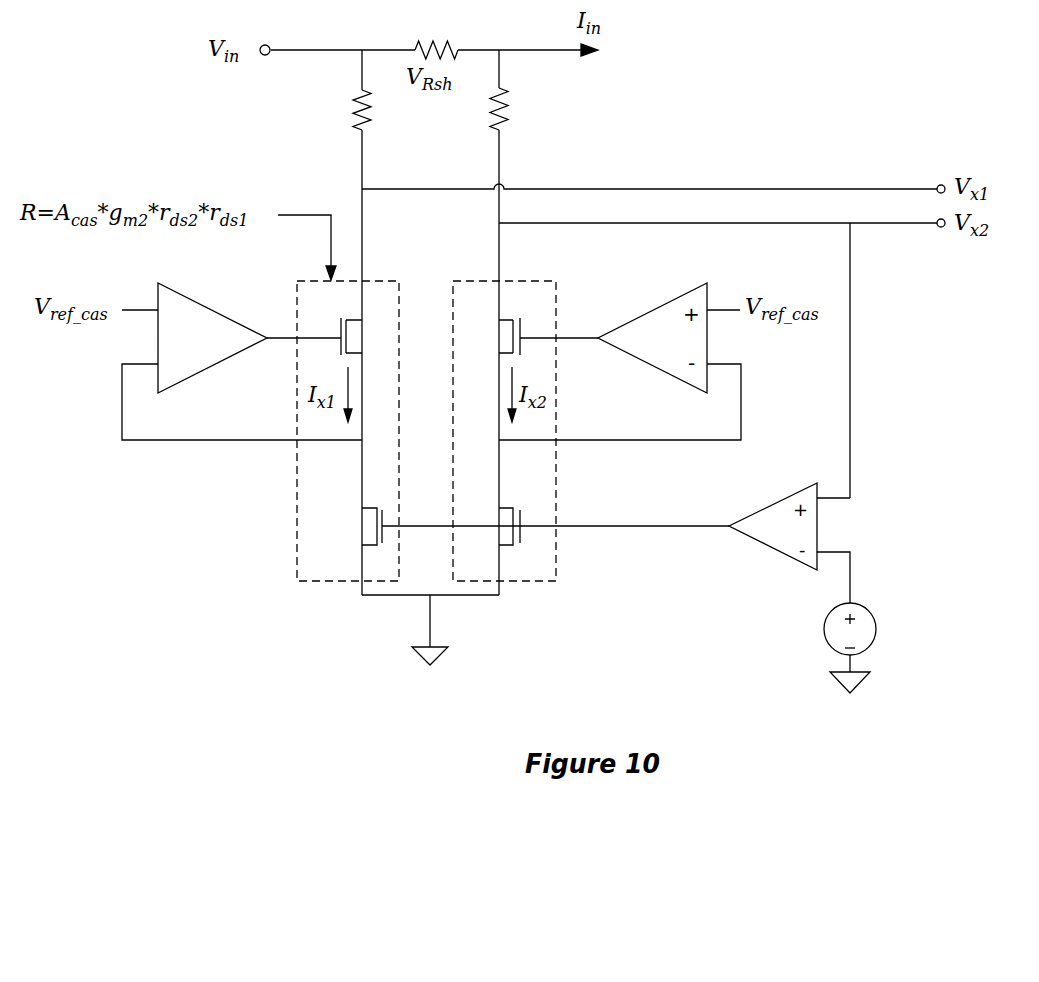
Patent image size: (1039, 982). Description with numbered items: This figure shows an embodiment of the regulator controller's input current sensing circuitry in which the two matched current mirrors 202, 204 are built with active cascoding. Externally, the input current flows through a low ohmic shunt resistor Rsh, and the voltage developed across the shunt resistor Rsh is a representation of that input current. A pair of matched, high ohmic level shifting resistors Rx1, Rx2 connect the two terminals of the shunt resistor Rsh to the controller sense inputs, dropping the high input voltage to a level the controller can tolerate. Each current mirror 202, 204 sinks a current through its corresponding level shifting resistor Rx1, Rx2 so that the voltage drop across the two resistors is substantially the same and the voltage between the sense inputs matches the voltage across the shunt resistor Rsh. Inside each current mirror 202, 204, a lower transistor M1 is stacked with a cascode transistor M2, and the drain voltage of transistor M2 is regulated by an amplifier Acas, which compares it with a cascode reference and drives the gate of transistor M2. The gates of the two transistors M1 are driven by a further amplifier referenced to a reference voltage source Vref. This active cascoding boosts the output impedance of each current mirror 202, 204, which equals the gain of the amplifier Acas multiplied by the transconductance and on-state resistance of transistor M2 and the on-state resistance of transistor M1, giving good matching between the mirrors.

The current mirror 202 is at (297, 557).
The current mirror 204 is at (556, 557).
The shunt resistor Rsh is at (436, 33).
The level shifting resistor Rx1 is at (338, 110).
The level shifting resistor Rx2 is at (526, 109).
The transistor M1 is at (435, 541).
The transistor M2 is at (430, 336).
The amplifier Acas is at (432, 338).
The reference voltage source Vref is at (872, 629).